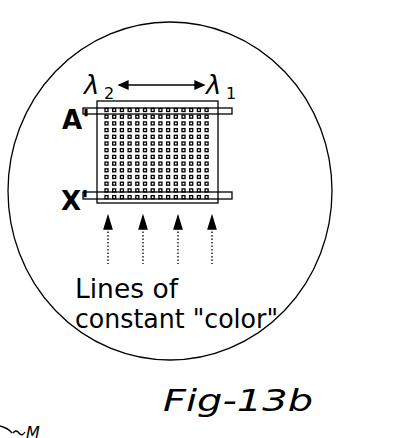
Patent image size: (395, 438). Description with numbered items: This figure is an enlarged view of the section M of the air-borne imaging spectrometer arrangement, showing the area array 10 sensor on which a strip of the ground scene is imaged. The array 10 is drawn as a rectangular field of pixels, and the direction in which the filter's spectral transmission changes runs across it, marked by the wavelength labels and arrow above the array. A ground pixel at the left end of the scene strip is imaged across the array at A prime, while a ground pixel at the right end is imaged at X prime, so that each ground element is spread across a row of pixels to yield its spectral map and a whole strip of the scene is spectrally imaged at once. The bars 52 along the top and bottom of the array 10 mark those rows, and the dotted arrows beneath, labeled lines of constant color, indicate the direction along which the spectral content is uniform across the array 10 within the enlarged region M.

The section of the spectrometer illustration M is at (266, 53).
The area array sensor 10 is at (221, 161).
The scan line bars 52 is at (234, 113).